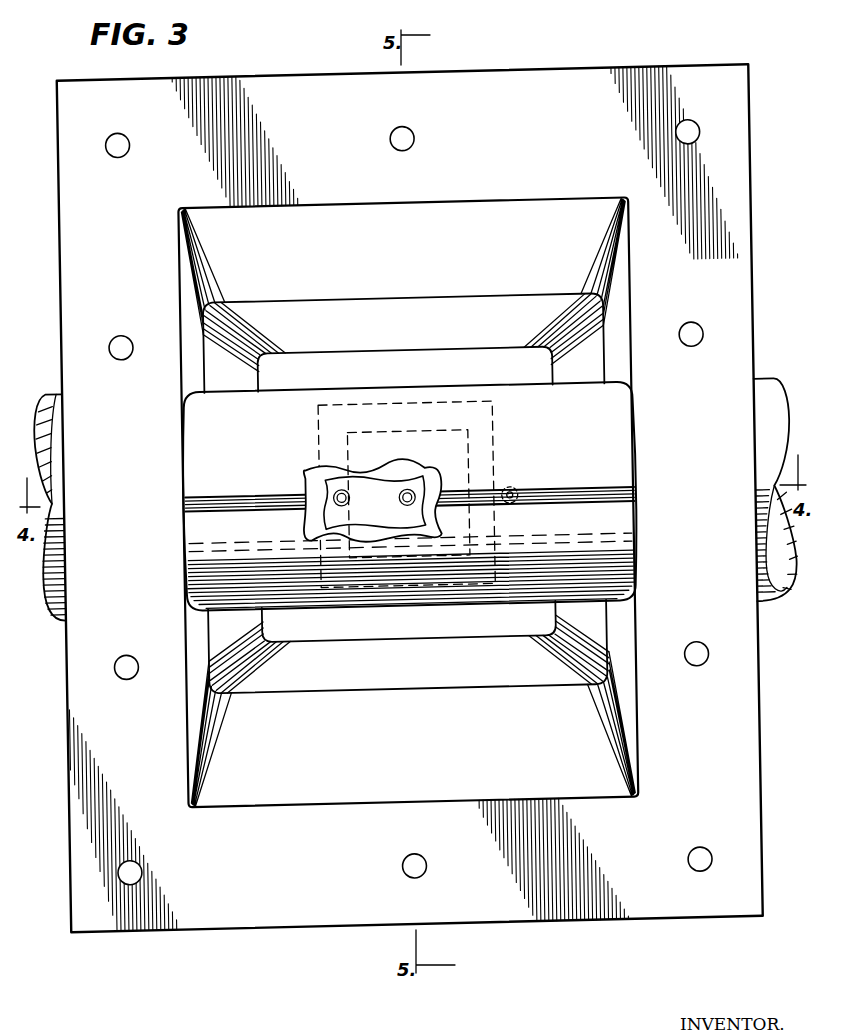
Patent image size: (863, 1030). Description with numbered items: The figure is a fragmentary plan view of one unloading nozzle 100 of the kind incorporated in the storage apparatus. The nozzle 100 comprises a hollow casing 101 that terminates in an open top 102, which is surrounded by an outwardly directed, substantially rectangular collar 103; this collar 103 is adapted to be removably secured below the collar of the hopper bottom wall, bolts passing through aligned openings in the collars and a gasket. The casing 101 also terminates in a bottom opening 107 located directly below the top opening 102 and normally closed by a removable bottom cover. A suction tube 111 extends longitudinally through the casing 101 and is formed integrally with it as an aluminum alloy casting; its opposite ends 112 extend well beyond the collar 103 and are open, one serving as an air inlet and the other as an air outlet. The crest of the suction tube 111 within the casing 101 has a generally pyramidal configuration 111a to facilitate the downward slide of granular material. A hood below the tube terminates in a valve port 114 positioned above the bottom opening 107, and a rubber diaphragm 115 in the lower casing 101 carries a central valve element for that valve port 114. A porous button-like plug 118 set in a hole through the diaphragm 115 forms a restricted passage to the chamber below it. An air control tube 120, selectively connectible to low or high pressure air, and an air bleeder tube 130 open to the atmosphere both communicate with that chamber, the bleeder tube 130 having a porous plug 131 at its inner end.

The nozzle 100 is at (413, 522).
The hollow casing 101 is at (305, 799).
The open top 102 is at (462, 203).
The rectangular collar 103 is at (548, 71).
The bottom opening 107 is at (418, 352).
The suction tube 111 is at (213, 572).
The pyramidal crest 111a is at (227, 500).
The opposite ends 112 is at (55, 400).
The valve port 114 is at (470, 520).
The diaphragm 115 is at (301, 520).
The button-like plug 118 is at (542, 487).
The air control tube 120 is at (347, 498).
The air bleeder tube 130 is at (404, 503).
The porous plug 131 is at (410, 491).